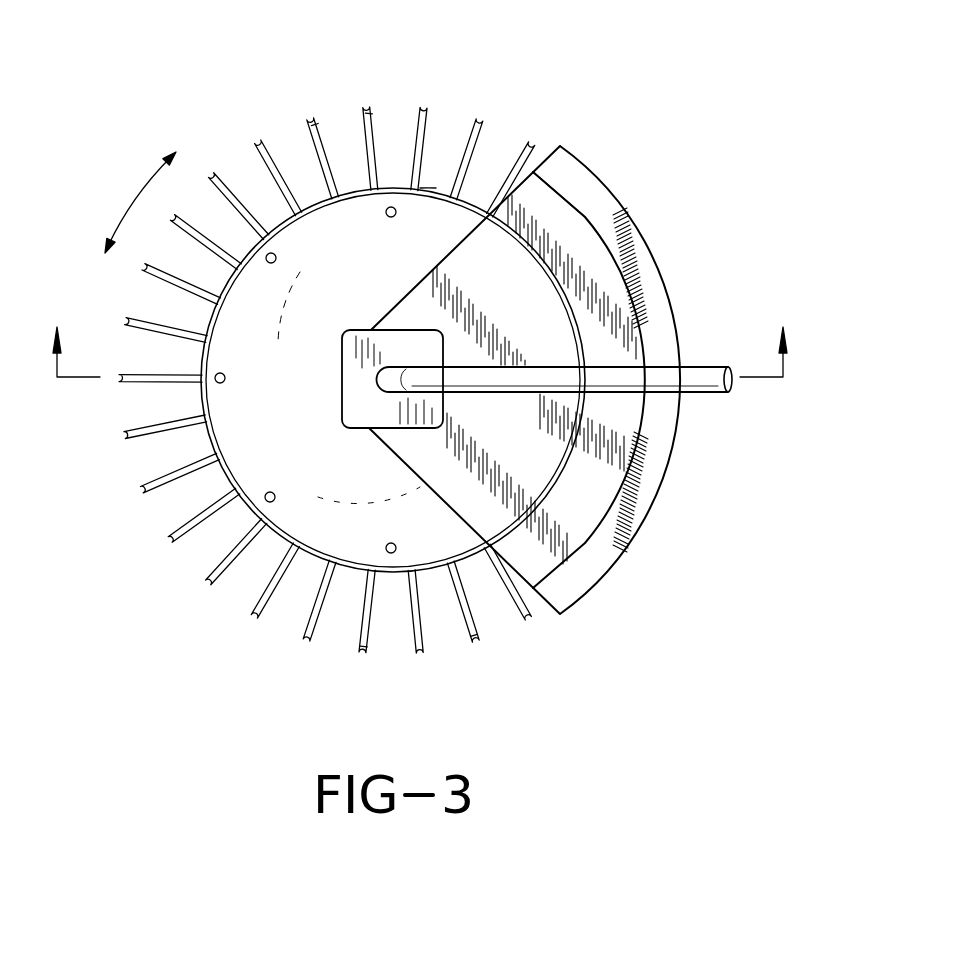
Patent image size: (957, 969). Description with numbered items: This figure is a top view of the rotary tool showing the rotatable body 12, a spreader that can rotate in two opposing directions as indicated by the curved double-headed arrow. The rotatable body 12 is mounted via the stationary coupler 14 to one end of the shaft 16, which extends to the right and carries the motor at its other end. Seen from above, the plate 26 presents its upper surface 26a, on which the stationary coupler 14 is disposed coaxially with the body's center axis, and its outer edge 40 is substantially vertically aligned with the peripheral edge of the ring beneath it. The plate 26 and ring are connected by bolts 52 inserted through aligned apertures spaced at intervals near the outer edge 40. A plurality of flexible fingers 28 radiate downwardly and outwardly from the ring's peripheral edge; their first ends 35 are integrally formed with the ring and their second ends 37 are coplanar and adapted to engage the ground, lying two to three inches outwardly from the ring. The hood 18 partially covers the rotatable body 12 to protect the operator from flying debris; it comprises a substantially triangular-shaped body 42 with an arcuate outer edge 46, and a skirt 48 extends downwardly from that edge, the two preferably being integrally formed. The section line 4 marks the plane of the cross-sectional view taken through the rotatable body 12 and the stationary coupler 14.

The section line 4- 4 is at (420, 340).
The rotatable body 12 is at (198, 590).
The stationary coupler 14 is at (357, 428).
The shaft 16 is at (706, 393).
The hood 18 is at (578, 592).
The plate 26 is at (230, 466).
The upper surface 26a is at (242, 417).
The flexible fingers 28 is at (321, 142).
The first ends 35 is at (365, 182).
The second ends 37 is at (321, 118).
The outer edge 40 is at (429, 187).
The triangular-shaped body 42 is at (590, 495).
The arcuate outer edge 46 is at (587, 215).
The skirt 48 is at (607, 556).
The bolts 52 is at (391, 218).